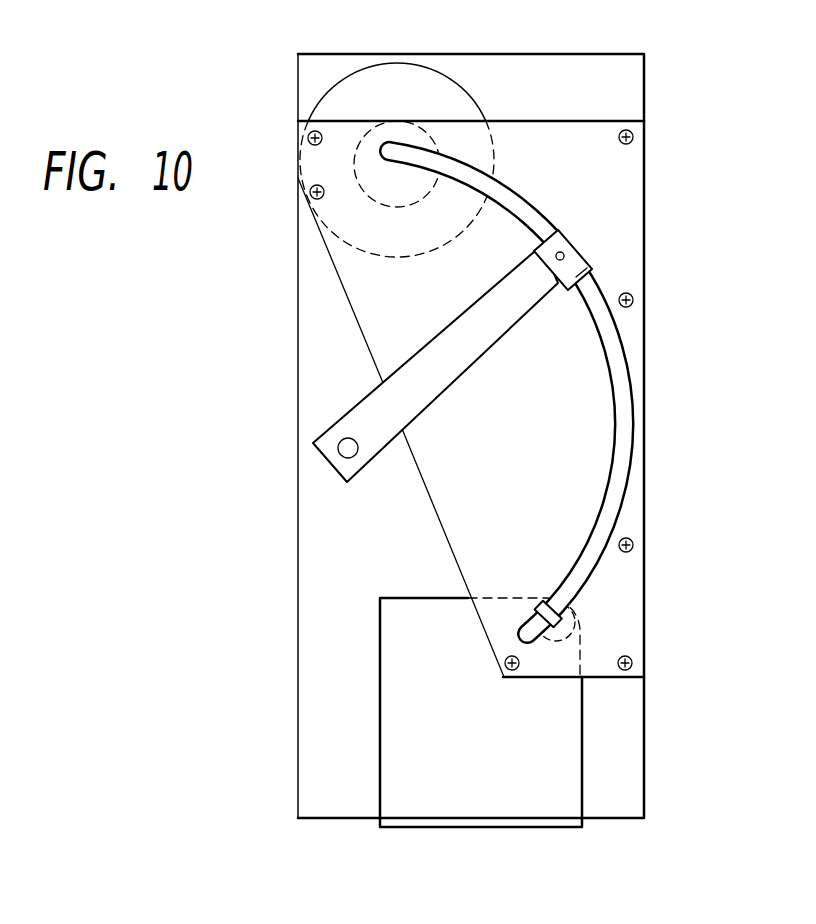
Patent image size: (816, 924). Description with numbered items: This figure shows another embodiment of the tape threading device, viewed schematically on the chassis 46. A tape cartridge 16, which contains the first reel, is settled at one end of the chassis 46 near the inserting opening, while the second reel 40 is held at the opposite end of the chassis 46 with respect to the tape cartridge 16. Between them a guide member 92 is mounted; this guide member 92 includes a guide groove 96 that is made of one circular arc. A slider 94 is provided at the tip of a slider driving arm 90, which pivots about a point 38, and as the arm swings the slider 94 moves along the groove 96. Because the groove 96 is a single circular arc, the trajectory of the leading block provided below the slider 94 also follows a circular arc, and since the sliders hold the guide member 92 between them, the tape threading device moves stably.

The tape cartridge 16 is at (395, 718).
The pivot 38 is at (345, 455).
The second reel 40 is at (360, 82).
The chassis 46 is at (553, 60).
The slider driving arm 90 is at (353, 424).
The guide member 92 is at (634, 202).
The slider 94 is at (580, 270).
The guide groove 96 is at (622, 392).